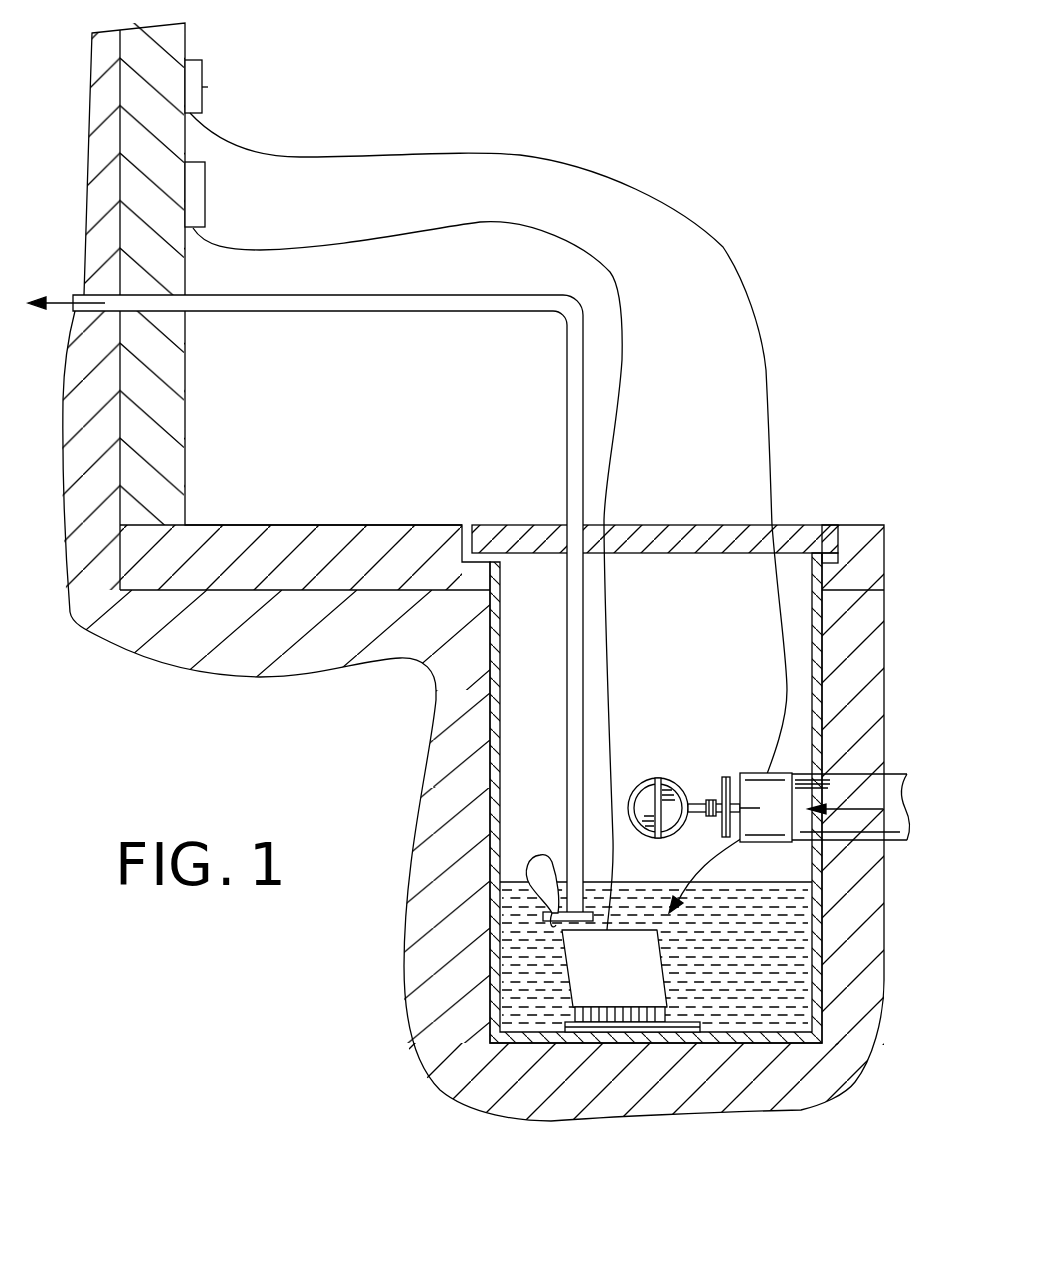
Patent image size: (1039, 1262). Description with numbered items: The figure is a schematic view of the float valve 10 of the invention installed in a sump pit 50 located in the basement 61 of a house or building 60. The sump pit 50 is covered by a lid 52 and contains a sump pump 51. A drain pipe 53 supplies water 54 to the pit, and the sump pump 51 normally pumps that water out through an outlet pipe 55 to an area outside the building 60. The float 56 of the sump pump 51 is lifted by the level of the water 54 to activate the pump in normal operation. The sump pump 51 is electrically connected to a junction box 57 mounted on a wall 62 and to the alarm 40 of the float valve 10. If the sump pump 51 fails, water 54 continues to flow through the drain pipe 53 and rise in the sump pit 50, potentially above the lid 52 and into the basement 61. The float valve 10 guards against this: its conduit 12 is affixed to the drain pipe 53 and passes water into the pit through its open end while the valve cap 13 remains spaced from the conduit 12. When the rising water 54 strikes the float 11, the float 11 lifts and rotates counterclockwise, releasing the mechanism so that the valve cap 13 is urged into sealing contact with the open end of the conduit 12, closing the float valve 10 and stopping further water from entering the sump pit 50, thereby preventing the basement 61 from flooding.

The float valve 10 is at (710, 783).
The float 11 is at (640, 788).
The conduit 12 is at (750, 790).
The valve cap 13 is at (720, 785).
The alarm 40 is at (192, 68).
The sump pit 50 is at (527, 600).
The sump pump 51 is at (638, 982).
The lid 52 is at (672, 545).
The drain pipe 53 is at (903, 775).
The water 54 is at (739, 914).
The outlet pipe 55 is at (273, 300).
The float 56 is at (549, 862).
The junction box 57 is at (200, 187).
The building 60 is at (84, 164).
The basement 61 is at (553, 94).
The wall 62 is at (205, 387).